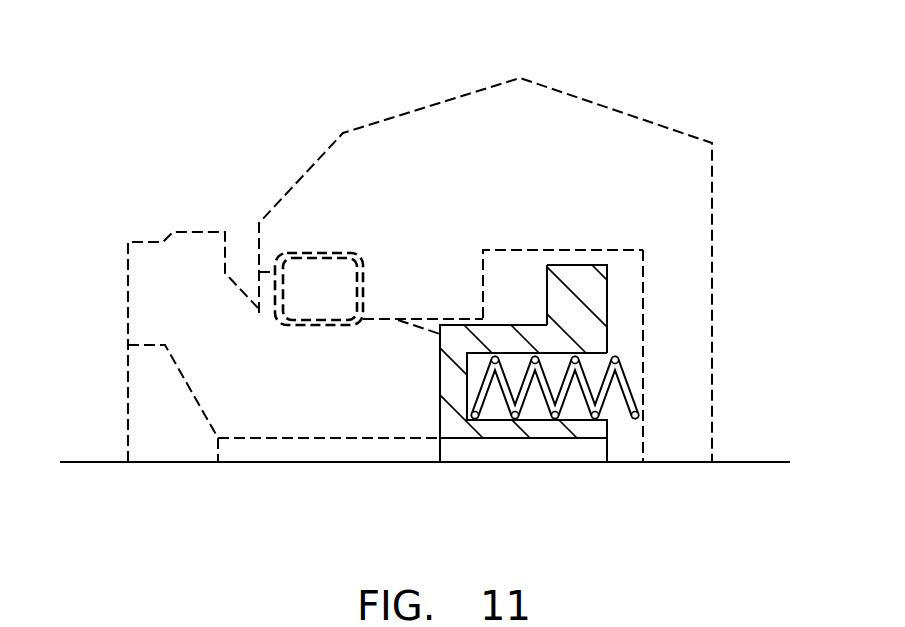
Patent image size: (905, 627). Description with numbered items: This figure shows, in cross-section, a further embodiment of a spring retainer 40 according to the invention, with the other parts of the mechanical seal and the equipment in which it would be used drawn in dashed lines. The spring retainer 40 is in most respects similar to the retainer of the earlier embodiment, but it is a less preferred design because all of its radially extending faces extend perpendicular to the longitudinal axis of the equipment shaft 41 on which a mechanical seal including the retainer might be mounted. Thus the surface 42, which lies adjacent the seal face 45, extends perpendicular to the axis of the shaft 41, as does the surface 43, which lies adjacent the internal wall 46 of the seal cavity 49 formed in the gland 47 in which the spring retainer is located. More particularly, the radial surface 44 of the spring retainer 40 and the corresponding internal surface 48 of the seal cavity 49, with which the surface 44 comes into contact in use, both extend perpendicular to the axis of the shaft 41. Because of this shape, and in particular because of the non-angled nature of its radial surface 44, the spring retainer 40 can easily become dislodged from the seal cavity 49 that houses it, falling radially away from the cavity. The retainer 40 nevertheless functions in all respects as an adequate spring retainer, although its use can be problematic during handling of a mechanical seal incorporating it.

The spring retainer 40 is at (590, 297).
The equipment shaft 41 is at (446, 538).
The surface 42 is at (440, 388).
The surface 43 is at (608, 313).
The radial surface 44 is at (507, 240).
The seal face 45 is at (172, 295).
The internal wall 46 is at (643, 347).
The gland 47 is at (578, 143).
The internal surface 48 is at (483, 273).
The seal cavity 49 is at (643, 258).